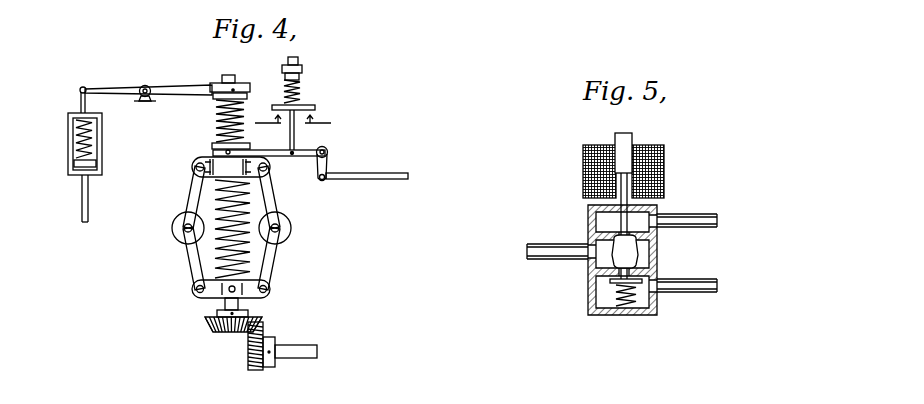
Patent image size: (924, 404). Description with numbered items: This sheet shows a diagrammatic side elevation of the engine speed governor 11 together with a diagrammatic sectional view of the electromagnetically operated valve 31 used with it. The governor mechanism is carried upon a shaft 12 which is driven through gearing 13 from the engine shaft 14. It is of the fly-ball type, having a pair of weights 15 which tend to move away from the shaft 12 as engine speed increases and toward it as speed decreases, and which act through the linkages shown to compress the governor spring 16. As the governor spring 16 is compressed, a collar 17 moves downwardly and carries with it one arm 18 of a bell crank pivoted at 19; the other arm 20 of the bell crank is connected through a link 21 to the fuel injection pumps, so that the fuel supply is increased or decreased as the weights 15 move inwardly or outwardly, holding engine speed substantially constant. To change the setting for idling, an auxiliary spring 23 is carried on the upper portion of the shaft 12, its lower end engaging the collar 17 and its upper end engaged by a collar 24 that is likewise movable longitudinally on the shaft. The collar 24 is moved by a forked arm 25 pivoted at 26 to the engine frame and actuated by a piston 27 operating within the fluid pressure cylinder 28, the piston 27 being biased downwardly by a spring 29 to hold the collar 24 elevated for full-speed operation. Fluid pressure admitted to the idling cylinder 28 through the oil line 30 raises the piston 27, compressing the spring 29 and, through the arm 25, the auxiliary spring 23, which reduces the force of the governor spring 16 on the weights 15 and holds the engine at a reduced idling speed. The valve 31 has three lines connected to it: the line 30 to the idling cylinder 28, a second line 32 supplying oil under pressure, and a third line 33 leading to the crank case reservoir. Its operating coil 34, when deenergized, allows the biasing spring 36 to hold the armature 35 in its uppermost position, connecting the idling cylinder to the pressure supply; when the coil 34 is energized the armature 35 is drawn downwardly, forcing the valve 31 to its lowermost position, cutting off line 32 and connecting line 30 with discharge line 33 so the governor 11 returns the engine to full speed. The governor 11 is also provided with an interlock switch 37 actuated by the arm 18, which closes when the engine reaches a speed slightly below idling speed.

In FIG. 4, the governor 11 is at (181, 261).
In FIG. 4, the shaft 12 is at (240, 304).
In FIG. 4, the gearing 13 is at (235, 333).
In FIG. 4, the engine shaft 14 is at (305, 345).
In FIG. 4, the weights 15 is at (292, 230).
In FIG. 4, the governor spring 16 is at (215, 196).
In FIG. 4, the collar 17 is at (212, 150).
In FIG. 4, the arm 18 is at (275, 156).
In FIG. 4, the pivot 19 is at (330, 151).
In FIG. 4, the arm 20 is at (329, 167).
In FIG. 4, the link 21 is at (377, 189).
In FIG. 4, the auxiliary spring 23 is at (212, 107).
In FIG. 4, the collar 24 is at (240, 83).
In FIG. 4, the forked arm 25 is at (178, 87).
In FIG. 4, the pivot 26 is at (146, 85).
In FIG. 4, the piston 27 is at (74, 164).
In FIG. 4, the fluid pressure cylinder 28 is at (68, 114).
In FIG. 4, the spring 29 is at (73, 140).
In FIG. 4, the oil line 30 is at (82, 204).
In FIG. 5, the oil line 30 is at (566, 228).
In FIG. 5, the valve 31 is at (636, 255).
In FIG. 5, the oil line 32 is at (702, 280).
In FIG. 5, the oil line 33 is at (688, 228).
In FIG. 5, the operating coil 34 is at (660, 160).
In FIG. 5, the armature 35 is at (631, 136).
In FIG. 5, the biasing spring 36 is at (644, 308).
In FIG. 4, the interlock switch 37 is at (312, 106).